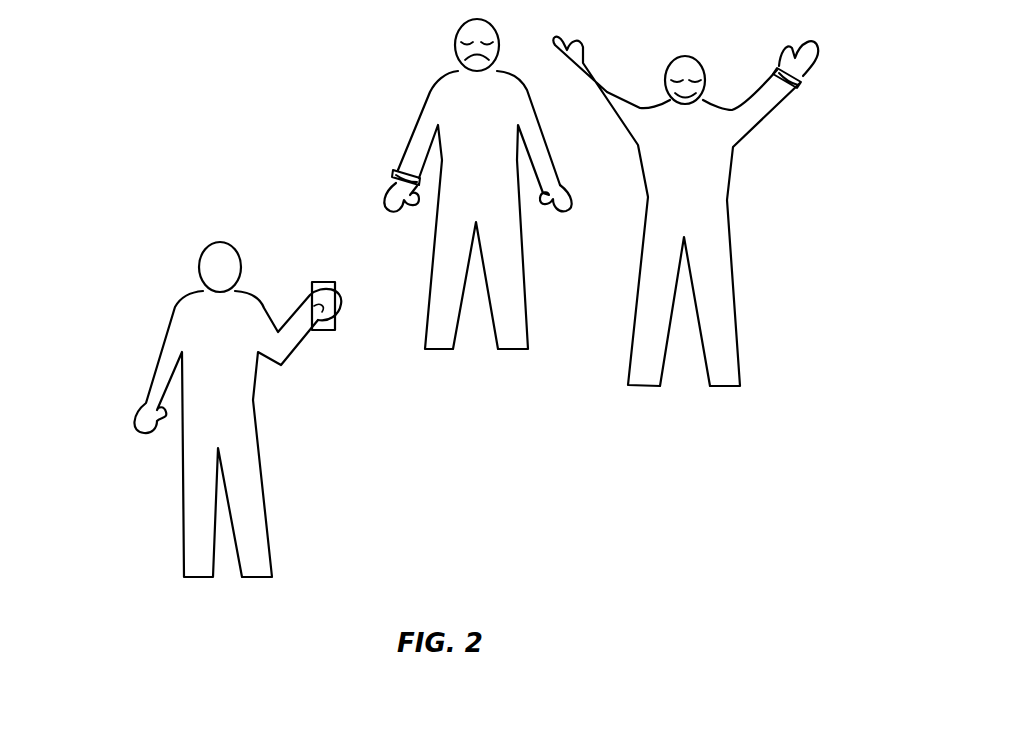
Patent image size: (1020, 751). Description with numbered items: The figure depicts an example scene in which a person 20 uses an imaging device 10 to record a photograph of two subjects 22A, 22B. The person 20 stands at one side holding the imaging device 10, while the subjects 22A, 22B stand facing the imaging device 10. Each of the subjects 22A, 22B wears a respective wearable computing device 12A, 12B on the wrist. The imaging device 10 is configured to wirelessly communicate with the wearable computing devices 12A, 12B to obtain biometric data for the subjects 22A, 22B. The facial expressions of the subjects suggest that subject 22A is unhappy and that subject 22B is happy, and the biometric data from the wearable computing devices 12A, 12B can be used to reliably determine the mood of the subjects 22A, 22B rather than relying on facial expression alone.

The imaging device 10 is at (322, 330).
The person 20 is at (247, 412).
The subject 22A is at (430, 102).
The wearable computing device 12A is at (398, 173).
The subject 22B is at (717, 202).
The wearable computing device 12B is at (800, 88).